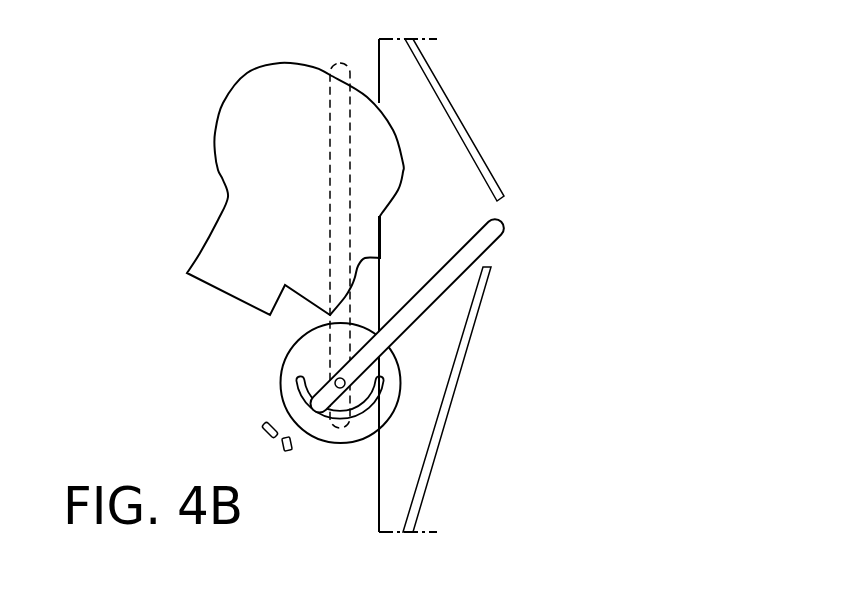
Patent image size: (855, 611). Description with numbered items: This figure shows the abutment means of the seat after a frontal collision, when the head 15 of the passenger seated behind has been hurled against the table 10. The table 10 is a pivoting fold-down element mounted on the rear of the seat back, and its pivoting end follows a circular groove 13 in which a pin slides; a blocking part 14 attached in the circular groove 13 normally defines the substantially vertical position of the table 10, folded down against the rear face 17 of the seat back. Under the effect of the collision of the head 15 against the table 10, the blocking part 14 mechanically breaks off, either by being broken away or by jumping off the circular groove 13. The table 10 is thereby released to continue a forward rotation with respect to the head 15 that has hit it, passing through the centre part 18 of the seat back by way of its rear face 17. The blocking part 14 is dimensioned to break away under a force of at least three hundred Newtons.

The table 10 is at (486, 236).
The circular groove 13 is at (372, 409).
The blocking part 14 is at (280, 443).
The head 15 is at (228, 134).
The rear face 17 is at (379, 50).
The centre part 18 is at (452, 104).